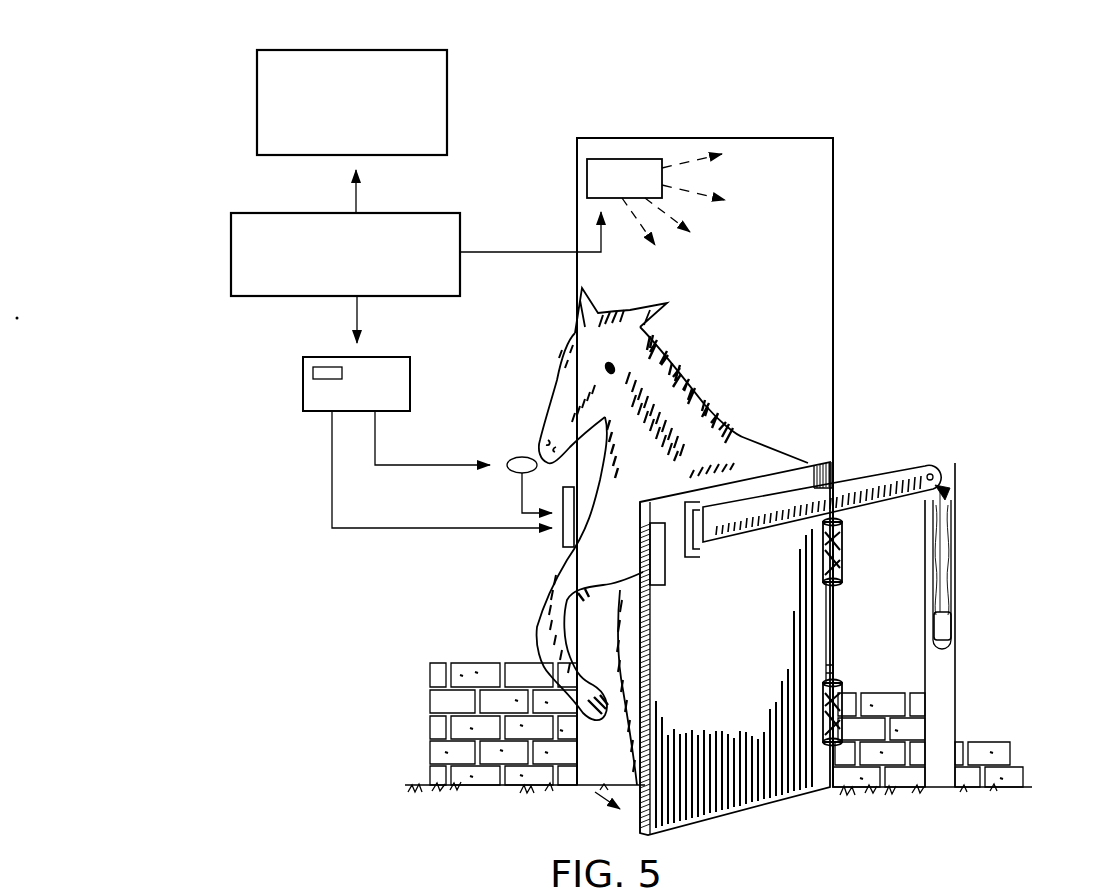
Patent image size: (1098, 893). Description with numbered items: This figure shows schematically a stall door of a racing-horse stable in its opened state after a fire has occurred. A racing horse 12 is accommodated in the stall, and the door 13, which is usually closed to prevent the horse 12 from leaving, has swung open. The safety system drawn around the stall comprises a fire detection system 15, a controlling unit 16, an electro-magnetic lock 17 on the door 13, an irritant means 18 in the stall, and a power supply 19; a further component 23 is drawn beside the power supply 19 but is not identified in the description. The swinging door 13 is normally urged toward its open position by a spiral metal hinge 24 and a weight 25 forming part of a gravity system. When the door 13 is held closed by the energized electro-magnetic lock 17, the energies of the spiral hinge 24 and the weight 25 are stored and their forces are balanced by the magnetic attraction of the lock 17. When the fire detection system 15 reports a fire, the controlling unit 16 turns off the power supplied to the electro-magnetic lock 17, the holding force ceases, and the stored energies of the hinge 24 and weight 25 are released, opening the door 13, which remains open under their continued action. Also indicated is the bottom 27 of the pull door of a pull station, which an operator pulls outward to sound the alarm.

The racing horse 12 is at (690, 370).
The door 13 is at (728, 805).
The fire detection system 15 is at (447, 68).
The controlling unit 16 is at (231, 246).
The electro-magnetic lock 17 is at (563, 547).
The irritant means 18 is at (632, 160).
The power supply 19 is at (312, 405).
The battery back-up 23 is at (313, 372).
The spiral metal hinge 24 is at (843, 680).
The weight 25 is at (950, 625).
The bottom of the pull door 27 is at (520, 457).